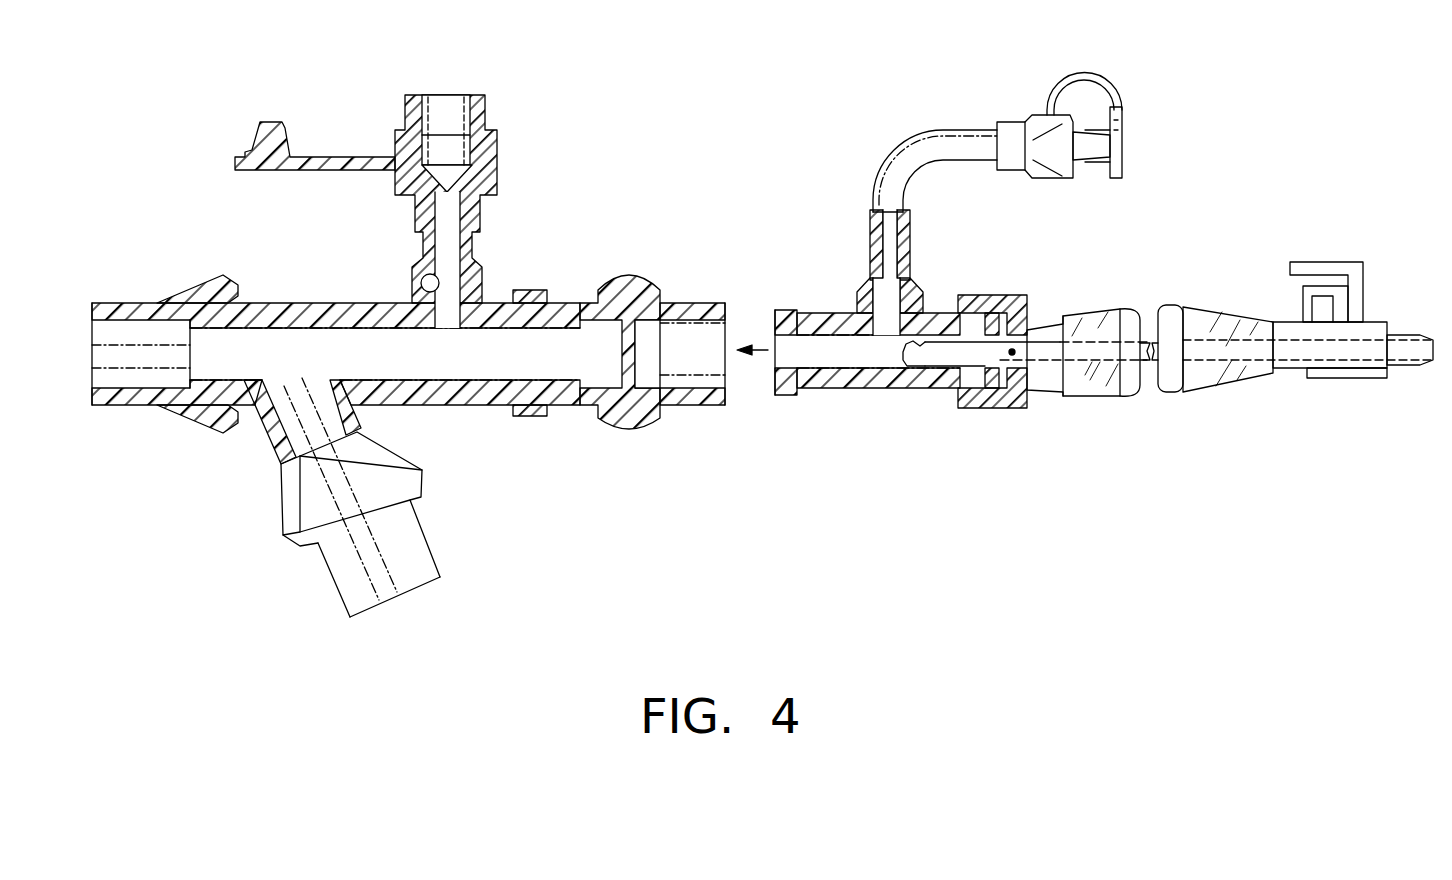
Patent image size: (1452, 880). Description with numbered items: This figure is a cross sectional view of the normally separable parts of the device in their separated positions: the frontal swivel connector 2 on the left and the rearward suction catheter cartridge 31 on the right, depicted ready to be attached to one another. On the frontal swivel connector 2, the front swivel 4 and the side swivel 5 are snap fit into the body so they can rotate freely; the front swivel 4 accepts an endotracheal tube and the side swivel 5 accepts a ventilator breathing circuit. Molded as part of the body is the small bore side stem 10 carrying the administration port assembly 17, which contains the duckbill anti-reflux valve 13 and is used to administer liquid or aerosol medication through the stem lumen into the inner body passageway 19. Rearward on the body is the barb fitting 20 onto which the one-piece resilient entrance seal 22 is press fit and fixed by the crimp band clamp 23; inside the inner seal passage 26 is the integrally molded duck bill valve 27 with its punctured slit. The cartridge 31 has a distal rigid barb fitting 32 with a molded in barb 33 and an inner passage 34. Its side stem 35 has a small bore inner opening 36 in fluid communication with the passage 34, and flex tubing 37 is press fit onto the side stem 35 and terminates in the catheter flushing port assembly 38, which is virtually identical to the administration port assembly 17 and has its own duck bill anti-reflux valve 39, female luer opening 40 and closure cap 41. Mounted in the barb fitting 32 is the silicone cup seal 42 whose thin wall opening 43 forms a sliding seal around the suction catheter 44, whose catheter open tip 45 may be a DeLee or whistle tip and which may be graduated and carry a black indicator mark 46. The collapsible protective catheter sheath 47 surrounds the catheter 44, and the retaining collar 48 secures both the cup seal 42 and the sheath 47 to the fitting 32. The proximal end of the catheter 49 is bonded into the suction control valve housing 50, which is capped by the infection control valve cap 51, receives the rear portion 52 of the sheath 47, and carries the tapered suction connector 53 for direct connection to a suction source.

The frontal swivel connector 2 is at (256, 456).
The front swivel 4 is at (160, 303).
The side swivel 5 is at (290, 545).
The side stem 10 is at (432, 295).
The duckbill anti-reflux valve 13 is at (455, 178).
The administration port assembly 17 is at (514, 175).
The inner body passageway 19 is at (445, 318).
The barb fitting 20 is at (535, 380).
The entrance seal 22 is at (582, 300).
The crimp band clamp 23 is at (522, 290).
The inner seal passage 26 is at (708, 332).
The duck bill valve 27 is at (652, 374).
The suction catheter cartridge 31 is at (1138, 292).
The barb fitting 32 is at (862, 385).
The barb 33 is at (790, 393).
The inner passage 34 is at (783, 392).
The side stem 35 is at (860, 292).
The inner opening 36 is at (915, 302).
The flex tubing 37 is at (893, 165).
The catheter flushing port assembly 38 is at (1040, 116).
The duck bill anti-reflux valve 39 is at (1045, 172).
The female luer opening 40 is at (1093, 158).
The closure cap 41 is at (1120, 110).
The cup seal 42 is at (997, 395).
The thin wall opening 43 is at (922, 358).
The suction catheter 44 is at (940, 356).
The catheter open tip 45 is at (906, 368).
The indicator mark 46 is at (1015, 356).
The protective catheter sheath 47 is at (1083, 309).
The retaining collar 48 is at (1000, 295).
The proximal end of the catheter 49 is at (1262, 382).
The suction control valve housing 50 is at (1350, 378).
The infection control valve cap 51 is at (1312, 264).
The rear portion of sheath 52 is at (1292, 320).
The tapered suction connector 53 is at (1400, 335).